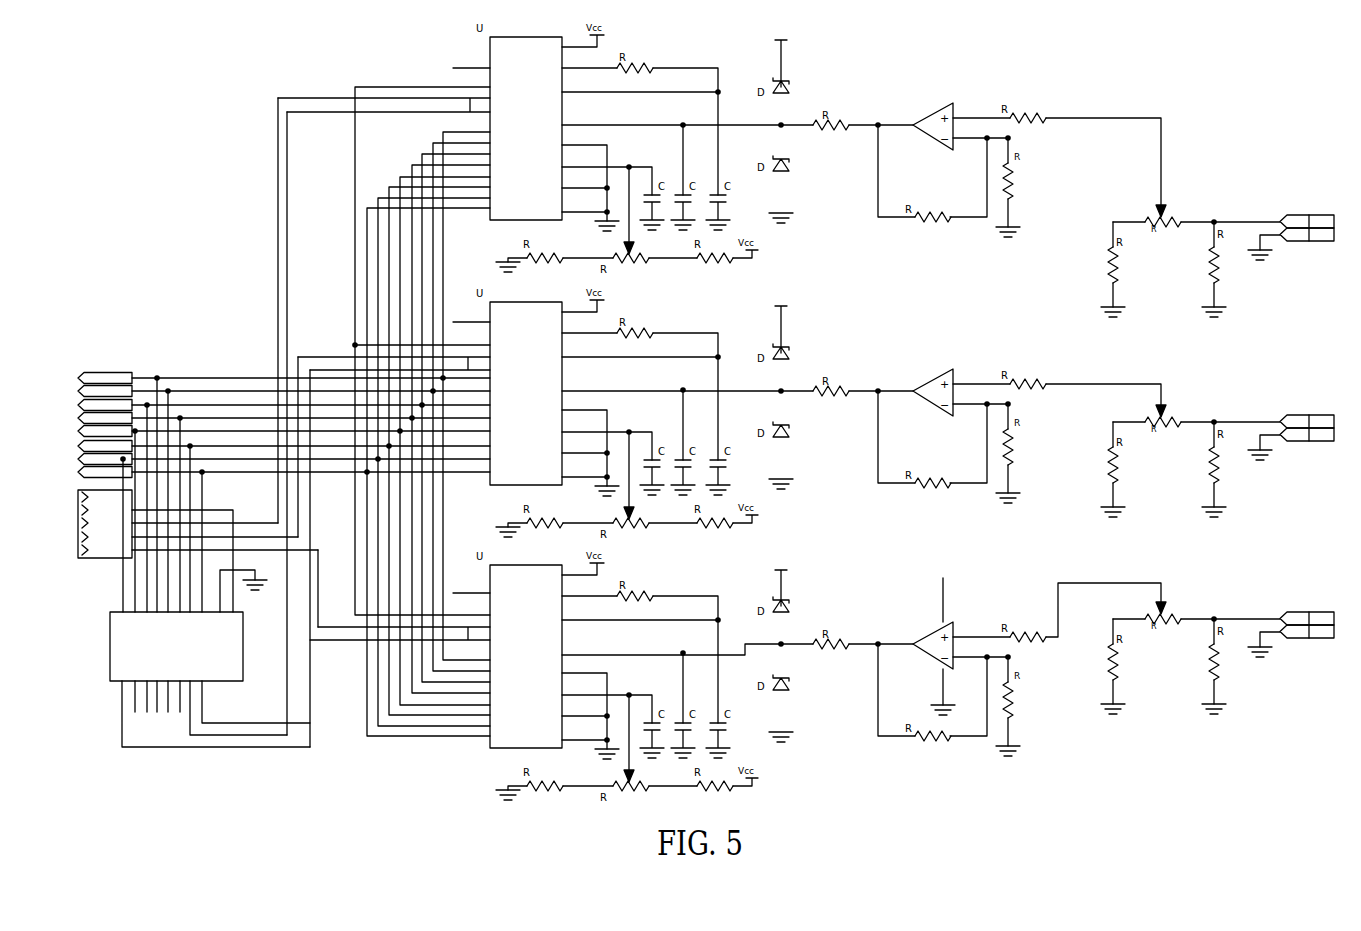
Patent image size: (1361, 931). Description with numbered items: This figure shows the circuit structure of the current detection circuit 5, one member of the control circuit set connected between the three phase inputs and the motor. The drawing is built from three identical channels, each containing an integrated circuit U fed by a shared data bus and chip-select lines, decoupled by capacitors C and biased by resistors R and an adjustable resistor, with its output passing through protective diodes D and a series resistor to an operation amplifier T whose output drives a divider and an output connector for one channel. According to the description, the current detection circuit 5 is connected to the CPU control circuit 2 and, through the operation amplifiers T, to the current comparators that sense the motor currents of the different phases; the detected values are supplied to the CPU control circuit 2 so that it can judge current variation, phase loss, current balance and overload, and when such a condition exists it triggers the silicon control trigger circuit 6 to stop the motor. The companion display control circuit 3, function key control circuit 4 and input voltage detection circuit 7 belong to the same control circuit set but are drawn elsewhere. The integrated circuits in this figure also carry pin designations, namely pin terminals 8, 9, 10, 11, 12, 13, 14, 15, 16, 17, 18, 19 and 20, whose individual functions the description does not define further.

The current detection circuit 5 is at (224, 153).
The CPU control circuit 2 is at (542, 417).
The display control circuit 3 is at (542, 356).
The function key control circuit 4 is at (423, 351).
The silicon control trigger circuit 6 is at (515, 409).
The input voltage detection circuit 7 is at (514, 441).
The DAC pin 8 is at (561, 447).
The DAC pin 9 is at (561, 424).
The DAC pin 10 is at (774, 423).
The DAC data input pin 11 is at (311, 390).
The DAC data input pin 12 is at (311, 419).
The DAC data input pin 13 is at (311, 412).
The DAC data input pin 14 is at (311, 423).
The DAC data input pin 15 is at (311, 436).
The DAC data input pin 16 is at (311, 446).
The DAC data input pin 17 is at (311, 457).
The DAC data input pin 18 is at (311, 467).
The DAC reference pin 19 is at (640, 389).
The DAC supply pin 20 is at (583, 299).